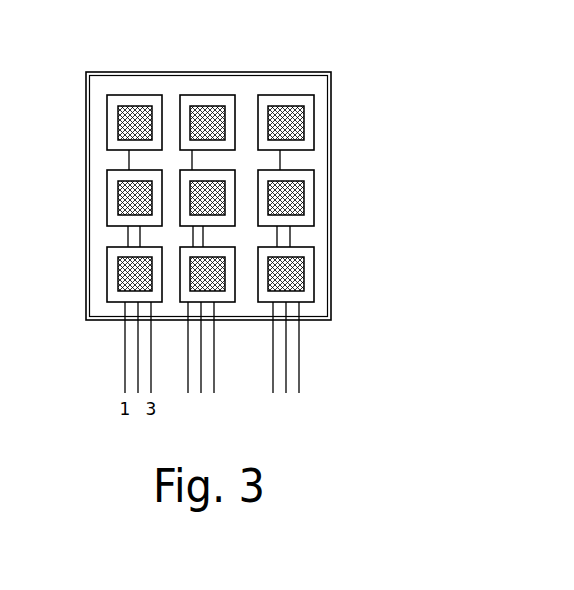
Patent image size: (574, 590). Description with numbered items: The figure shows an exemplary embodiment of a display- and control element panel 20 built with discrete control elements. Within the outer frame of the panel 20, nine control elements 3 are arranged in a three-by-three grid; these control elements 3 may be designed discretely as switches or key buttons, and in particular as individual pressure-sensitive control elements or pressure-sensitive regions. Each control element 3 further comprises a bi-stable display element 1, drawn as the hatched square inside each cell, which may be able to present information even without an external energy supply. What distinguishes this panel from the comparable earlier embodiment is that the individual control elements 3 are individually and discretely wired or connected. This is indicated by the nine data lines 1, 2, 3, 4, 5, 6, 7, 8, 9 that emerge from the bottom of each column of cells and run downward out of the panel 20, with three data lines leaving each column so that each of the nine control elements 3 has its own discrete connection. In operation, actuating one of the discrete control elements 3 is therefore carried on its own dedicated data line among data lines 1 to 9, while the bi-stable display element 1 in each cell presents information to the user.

The bi-stable display element 1 is at (118, 132).
The control elements 3 is at (292, 82).
The display- and control element panel 20 is at (356, 62).
The data line 2 is at (138, 360).
The data line 4 is at (188, 360).
The data line 5 is at (201, 360).
The data line 6 is at (214, 360).
The data line 7 is at (273, 360).
The data line 8 is at (286, 360).
The data line 9 is at (299, 360).